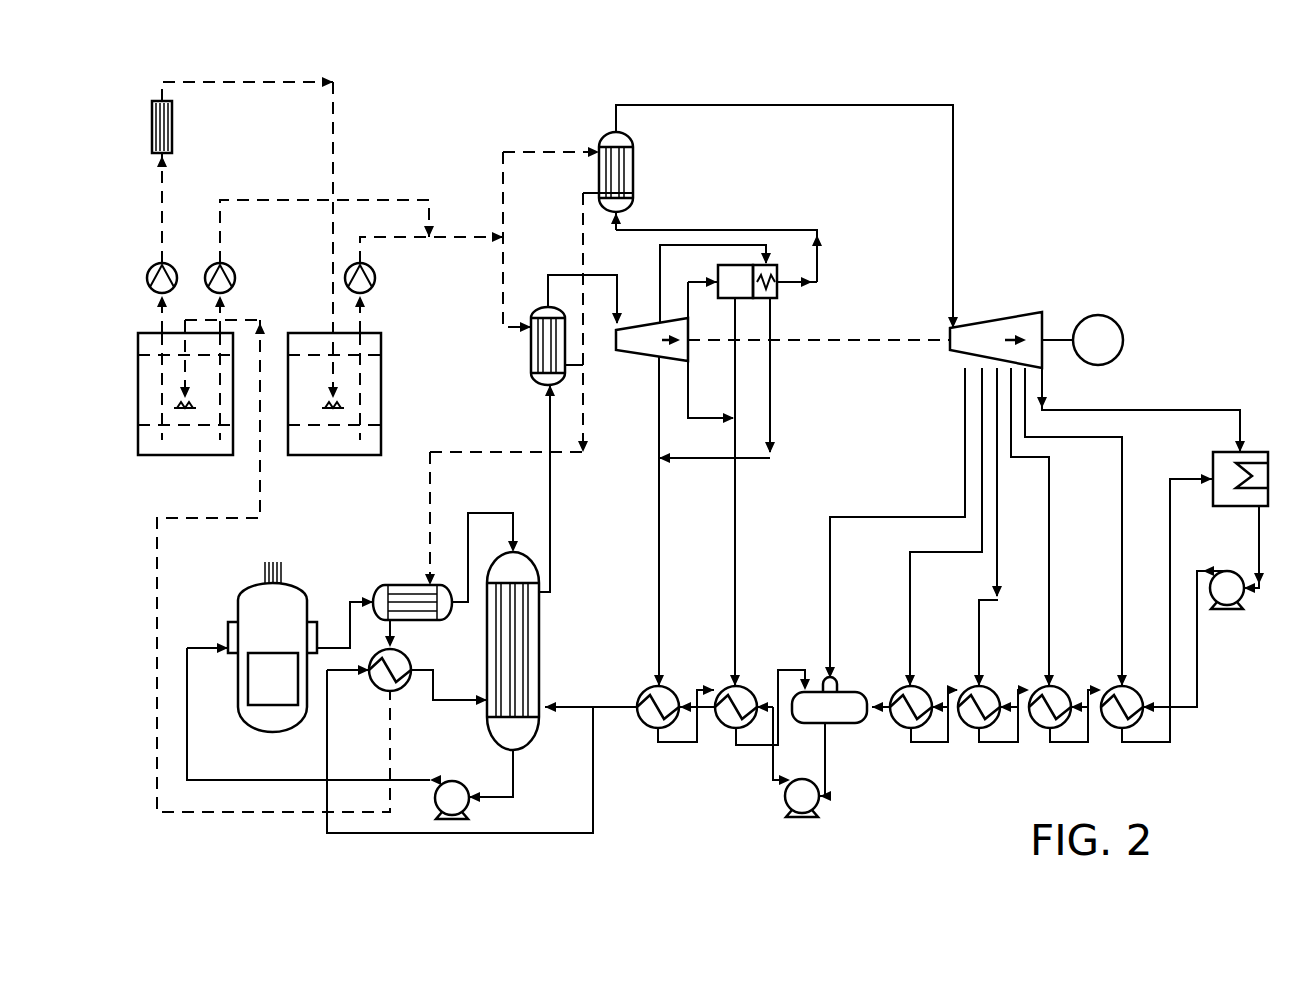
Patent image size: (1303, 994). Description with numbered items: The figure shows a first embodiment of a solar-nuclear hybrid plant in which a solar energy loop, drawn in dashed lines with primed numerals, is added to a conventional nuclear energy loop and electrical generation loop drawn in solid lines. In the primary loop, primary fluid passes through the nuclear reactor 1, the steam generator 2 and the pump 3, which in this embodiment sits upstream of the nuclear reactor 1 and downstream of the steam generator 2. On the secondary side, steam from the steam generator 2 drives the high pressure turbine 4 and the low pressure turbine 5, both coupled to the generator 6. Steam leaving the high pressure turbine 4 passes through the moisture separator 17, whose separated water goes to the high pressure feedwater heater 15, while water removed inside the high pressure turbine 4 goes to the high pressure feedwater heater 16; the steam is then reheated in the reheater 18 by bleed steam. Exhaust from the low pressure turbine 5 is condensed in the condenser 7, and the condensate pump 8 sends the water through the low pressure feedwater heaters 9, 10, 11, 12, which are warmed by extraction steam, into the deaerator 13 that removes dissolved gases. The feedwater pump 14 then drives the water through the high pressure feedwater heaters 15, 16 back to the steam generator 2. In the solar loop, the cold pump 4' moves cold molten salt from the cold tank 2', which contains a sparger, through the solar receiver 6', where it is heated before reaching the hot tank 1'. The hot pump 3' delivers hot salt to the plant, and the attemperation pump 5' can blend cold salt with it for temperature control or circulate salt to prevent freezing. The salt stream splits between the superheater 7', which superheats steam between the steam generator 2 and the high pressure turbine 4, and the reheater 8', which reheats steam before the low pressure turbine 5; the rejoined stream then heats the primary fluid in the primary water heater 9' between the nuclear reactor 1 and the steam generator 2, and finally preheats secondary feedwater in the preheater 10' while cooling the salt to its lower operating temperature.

The nuclear reactor 1 is at (314, 673).
The steam generator 2 is at (536, 593).
The pump 3 is at (451, 771).
The high pressure turbine 4 is at (693, 465).
The low pressure turbine 5 is at (996, 323).
The generator 6 is at (1112, 325).
The condenser 7 is at (1152, 480).
The condensate pump 8 is at (1193, 639).
The low pressure feedwater heater 9 is at (1118, 575).
The low pressure feedwater heater 10 is at (1056, 575).
The low pressure feedwater heater 11 is at (967, 728).
The low pressure feedwater heater 12 is at (899, 728).
The deaerator 13 is at (830, 724).
The feedwater pump 14 is at (800, 815).
The high pressure feedwater heater 15 is at (725, 728).
The high pressure feedwater heater 16 is at (645, 726).
The moisture separator 17 is at (775, 230).
The reheater 18 is at (777, 285).
The hot tank 1' is at (334, 413).
The cold tank 2' is at (264, 566).
The hot pump 3' is at (424, 282).
The cold pump 4' is at (152, 243).
The attemperation pump 5' is at (319, 266).
The solar receiver 6' is at (242, 115).
The superheater 7' is at (559, 268).
The reheater 8' is at (694, 278).
The primary water heater 9' is at (445, 549).
The preheater 10' is at (407, 667).